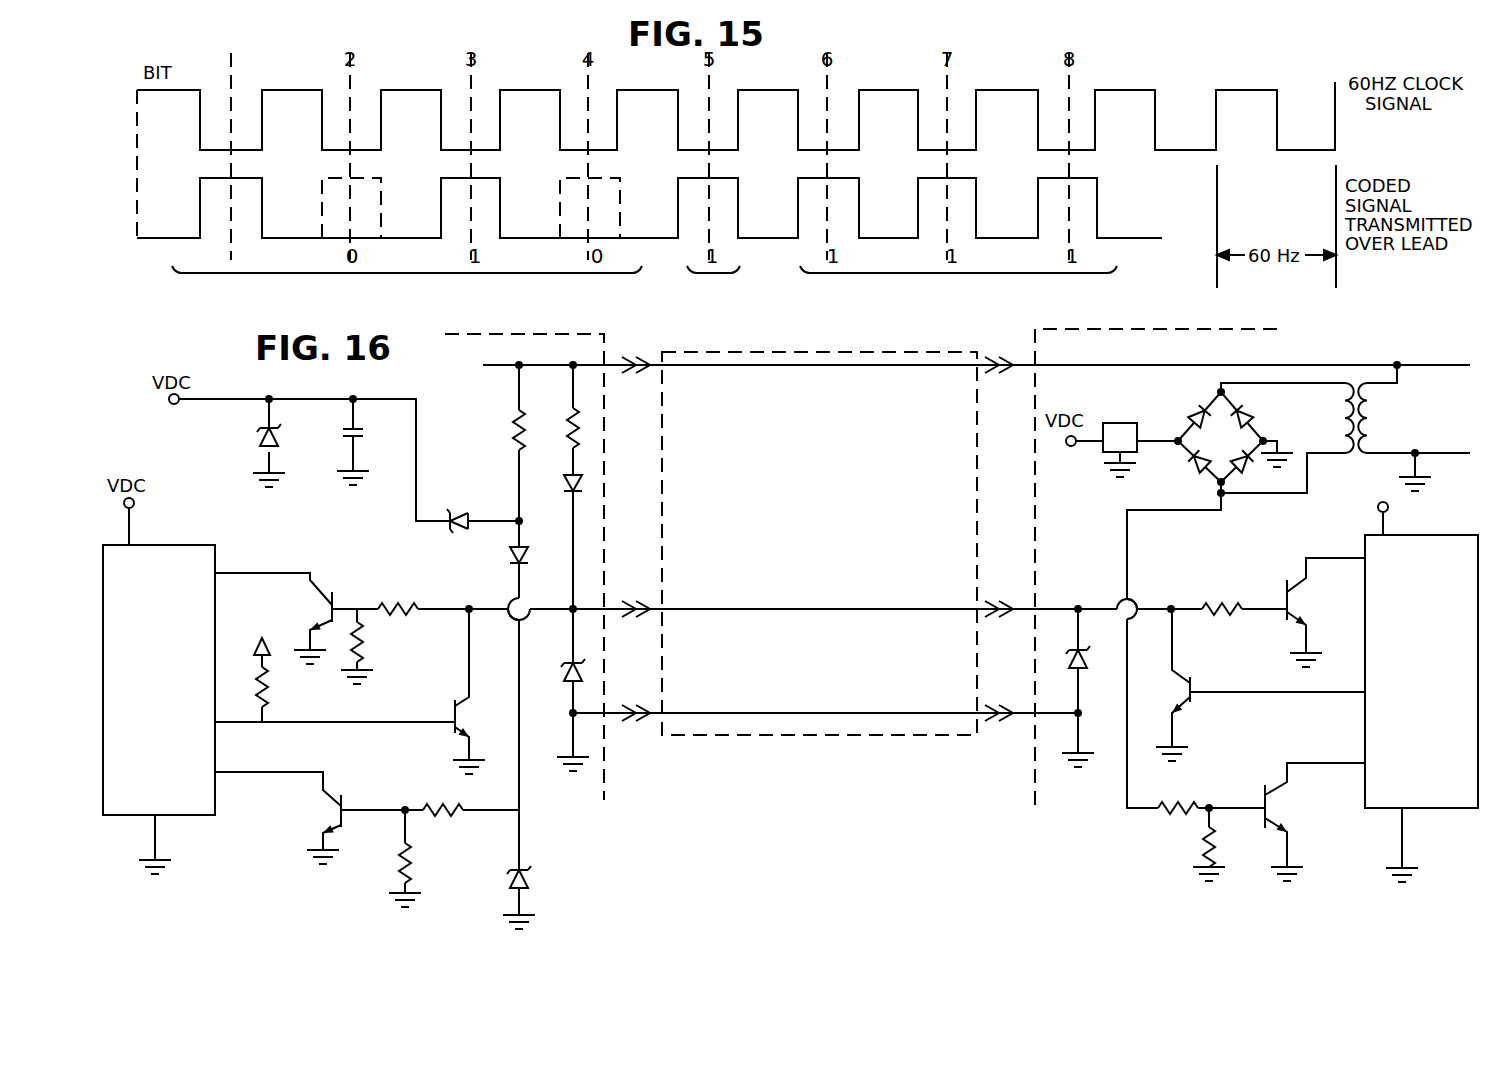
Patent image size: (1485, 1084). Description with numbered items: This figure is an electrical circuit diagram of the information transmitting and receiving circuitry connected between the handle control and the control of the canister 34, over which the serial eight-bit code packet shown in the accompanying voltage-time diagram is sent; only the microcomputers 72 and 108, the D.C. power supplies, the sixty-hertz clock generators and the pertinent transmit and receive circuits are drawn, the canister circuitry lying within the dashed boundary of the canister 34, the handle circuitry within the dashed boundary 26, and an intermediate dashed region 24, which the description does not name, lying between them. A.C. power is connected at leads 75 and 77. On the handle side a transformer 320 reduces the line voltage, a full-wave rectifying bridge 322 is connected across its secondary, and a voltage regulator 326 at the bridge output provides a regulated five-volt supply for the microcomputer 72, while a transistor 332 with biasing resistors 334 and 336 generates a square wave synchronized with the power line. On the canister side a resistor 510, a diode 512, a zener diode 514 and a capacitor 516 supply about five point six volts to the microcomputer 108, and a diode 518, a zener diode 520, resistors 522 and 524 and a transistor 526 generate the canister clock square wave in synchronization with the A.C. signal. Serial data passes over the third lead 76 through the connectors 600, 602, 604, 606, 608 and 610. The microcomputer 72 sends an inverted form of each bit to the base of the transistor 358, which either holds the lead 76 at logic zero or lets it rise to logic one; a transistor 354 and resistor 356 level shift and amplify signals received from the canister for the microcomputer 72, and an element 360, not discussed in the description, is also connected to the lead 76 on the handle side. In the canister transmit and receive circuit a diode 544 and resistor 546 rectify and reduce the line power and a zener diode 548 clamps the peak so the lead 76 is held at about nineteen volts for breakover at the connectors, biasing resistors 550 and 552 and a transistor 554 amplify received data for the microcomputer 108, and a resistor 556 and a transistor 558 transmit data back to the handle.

In FIG. 15, the lead 76 is at (752, 225).
In FIG. 16, the lead 76 is at (805, 606).
In FIG. 16, the A.C. power lead 75 is at (803, 370).
In FIG. 16, the A.C. power lead 77 is at (812, 712).
In FIG. 16, the microcomputer 108 is at (188, 545).
In FIG. 16, the microcomputer 72 is at (1437, 535).
In FIG. 16, the cable 24 is at (872, 745).
In FIG. 16, the receiver unit boundary 26 is at (1034, 786).
In FIG. 16, the canister 34 is at (612, 794).
In FIG. 16, the resistor 510 is at (508, 442).
In FIG. 16, the diode 512 is at (450, 512).
In FIG. 16, the zener diode 514 is at (258, 440).
In FIG. 16, the capacitor 516 is at (348, 428).
In FIG. 16, the diode 518 is at (508, 553).
In FIG. 16, the zener diode 520 is at (534, 882).
In FIG. 16, the resistor 522 is at (430, 806).
In FIG. 16, the resistor 524 is at (418, 864).
In FIG. 16, the transistor 526 is at (358, 790).
In FIG. 16, the diode 544 is at (583, 484).
In FIG. 16, the resistor 546 is at (581, 430).
In FIG. 16, the zener diode 548 is at (590, 677).
In FIG. 16, the biasing resistor 550 is at (404, 604).
In FIG. 16, the biasing resistor 552 is at (368, 641).
In FIG. 16, the transistor 554 is at (325, 589).
In FIG. 16, the resistor 556 is at (272, 688).
In FIG. 16, the transistor 558 is at (452, 706).
In FIG. 16, the connector 600 is at (638, 360).
In FIG. 16, the connector 602 is at (638, 600).
In FIG. 16, the connector 604 is at (651, 708).
In FIG. 16, the connector 606 is at (1003, 360).
In FIG. 16, the connector 608 is at (1006, 604).
In FIG. 16, the connector 610 is at (1000, 708).
In FIG. 16, the transformer 320 is at (1350, 458).
In FIG. 16, the full-wave rectifying bridge 322 is at (1238, 405).
In FIG. 16, the voltage regulator 326 is at (1105, 422).
In FIG. 16, the transistor 332 is at (1263, 792).
In FIG. 16, the biasing resistor 334 is at (1172, 800).
In FIG. 16, the biasing resistor 336 is at (1198, 845).
In FIG. 16, the transistor 354 is at (1282, 588).
In FIG. 16, the resistor 356 is at (1218, 598).
In FIG. 16, the transistor 358 is at (1196, 702).
In FIG. 16, the zener diode 360 is at (1068, 652).